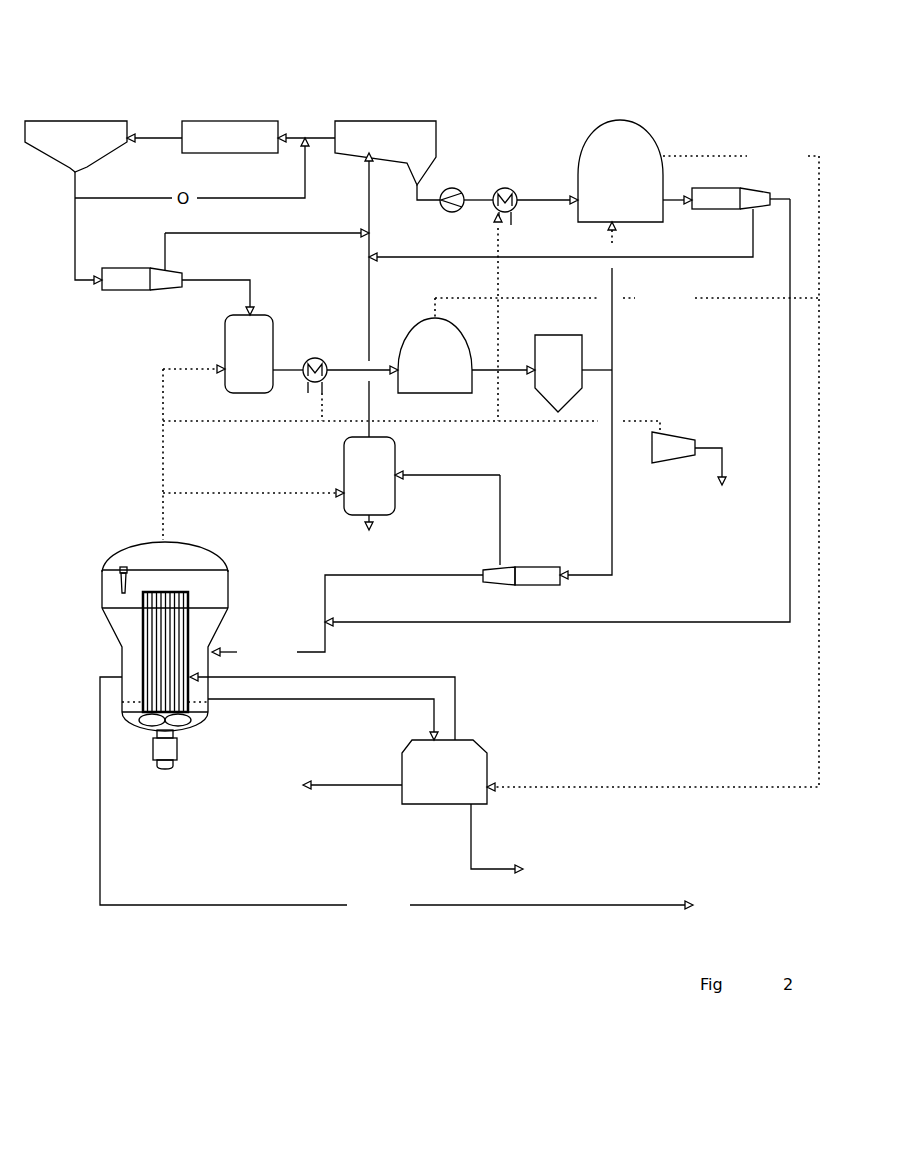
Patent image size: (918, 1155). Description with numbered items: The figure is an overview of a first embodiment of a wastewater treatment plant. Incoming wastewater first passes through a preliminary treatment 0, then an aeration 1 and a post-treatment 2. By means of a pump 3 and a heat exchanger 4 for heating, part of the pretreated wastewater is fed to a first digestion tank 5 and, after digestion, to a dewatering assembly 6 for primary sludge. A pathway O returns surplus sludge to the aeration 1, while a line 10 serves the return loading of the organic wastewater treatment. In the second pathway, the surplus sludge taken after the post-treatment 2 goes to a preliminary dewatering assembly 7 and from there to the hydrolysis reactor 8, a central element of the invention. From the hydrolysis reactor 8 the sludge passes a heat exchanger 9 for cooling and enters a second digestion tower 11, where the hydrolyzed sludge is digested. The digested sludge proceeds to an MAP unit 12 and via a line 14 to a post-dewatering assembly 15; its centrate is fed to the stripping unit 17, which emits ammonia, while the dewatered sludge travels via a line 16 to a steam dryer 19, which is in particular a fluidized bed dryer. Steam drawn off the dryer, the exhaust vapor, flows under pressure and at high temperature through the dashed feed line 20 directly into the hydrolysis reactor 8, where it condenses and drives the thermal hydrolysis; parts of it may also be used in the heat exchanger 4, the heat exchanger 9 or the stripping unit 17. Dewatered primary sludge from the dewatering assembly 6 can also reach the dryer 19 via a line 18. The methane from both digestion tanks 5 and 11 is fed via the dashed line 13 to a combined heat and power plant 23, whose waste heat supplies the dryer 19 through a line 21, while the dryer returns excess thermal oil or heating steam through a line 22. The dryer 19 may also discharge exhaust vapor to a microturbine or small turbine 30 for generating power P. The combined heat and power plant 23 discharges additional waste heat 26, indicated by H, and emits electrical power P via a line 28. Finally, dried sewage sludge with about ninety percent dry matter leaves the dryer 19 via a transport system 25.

The preliminary treatment 0 is at (372, 121).
The aeration 1 is at (207, 121).
The post-treatment 2 is at (67, 121).
The pump 3 is at (457, 188).
The heat exchanger 4 is at (505, 188).
The first digestion tank 5 is at (640, 128).
The dewatering assembly for primary sludge 6 is at (712, 188).
The preliminary dewatering assembly 7 is at (125, 290).
The hydrolysis reactor 8 is at (225, 340).
The heat exchanger 9 is at (313, 358).
The line 10 is at (369, 287).
The second digestion tower 11 is at (423, 318).
The MAP unit 12 is at (552, 335).
The line 13 is at (723, 298).
The line 14 is at (613, 563).
The post-dewatering assembly 15 is at (540, 567).
The line 16 is at (325, 610).
The stripping unit 17 is at (344, 473).
The line 18 is at (640, 620).
The steam dryer 19 is at (228, 548).
The feed line 20 is at (163, 517).
The line 21 is at (368, 676).
The line 22 is at (300, 700).
The combined heat and power plant 23 is at (480, 743).
The transport system 25 is at (170, 905).
The additional waste heat 26 is at (337, 785).
The line 28 is at (471, 852).
The microturbine or small turbine 30 is at (670, 432).